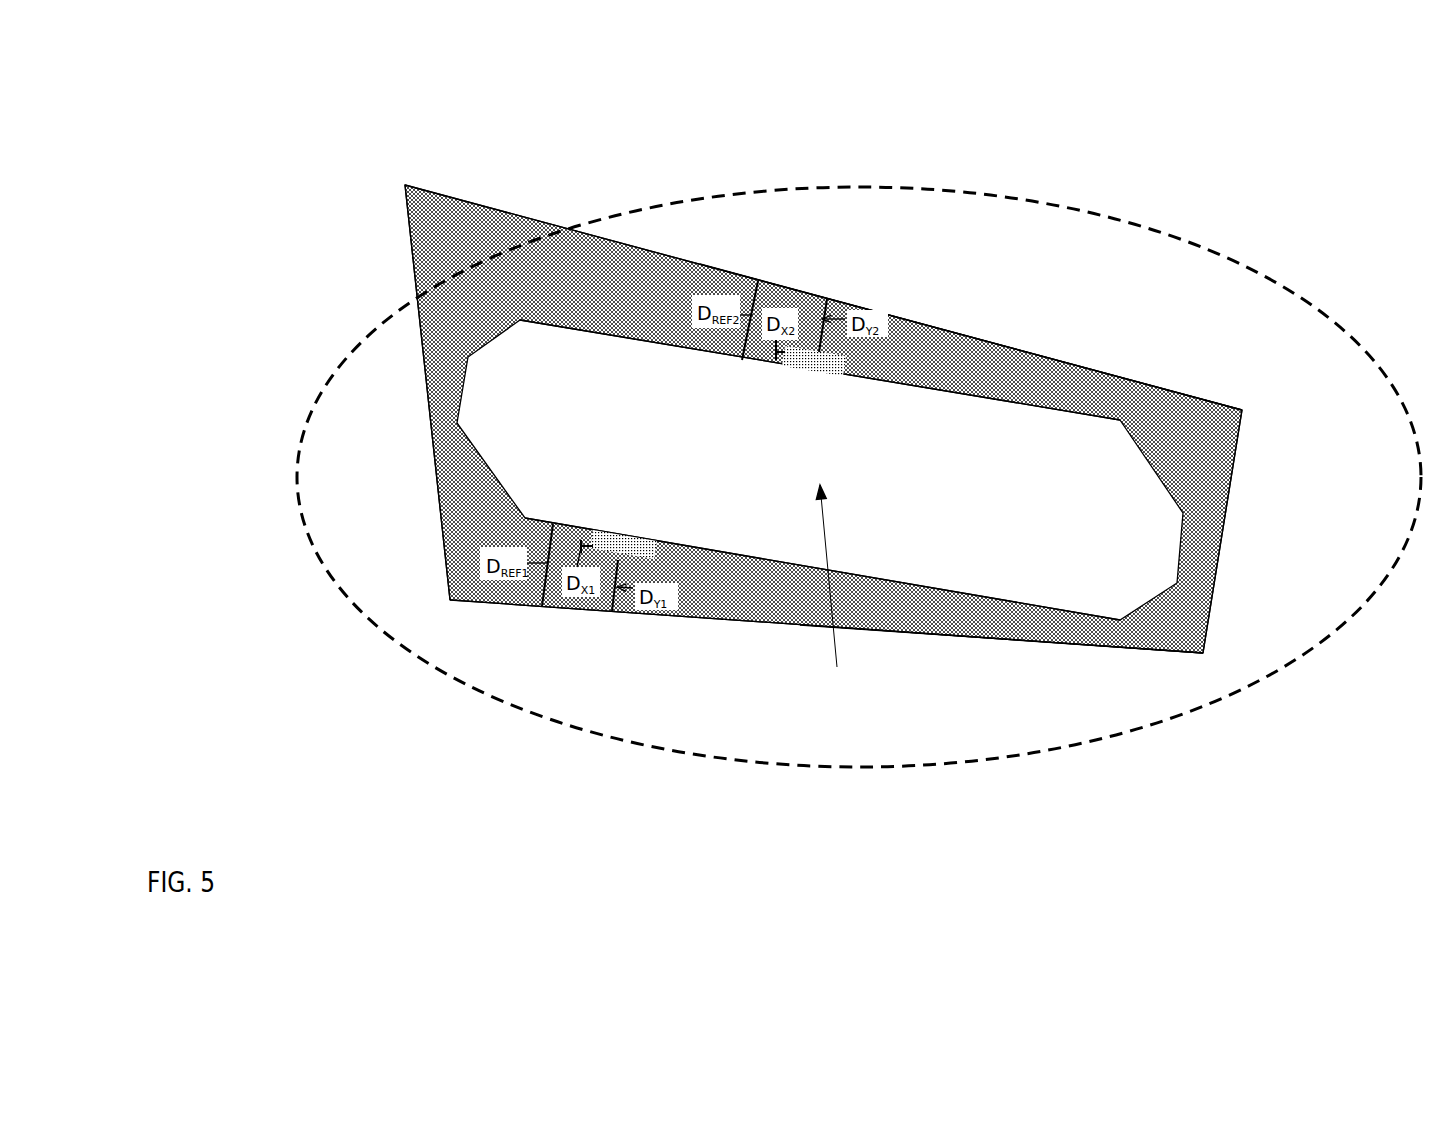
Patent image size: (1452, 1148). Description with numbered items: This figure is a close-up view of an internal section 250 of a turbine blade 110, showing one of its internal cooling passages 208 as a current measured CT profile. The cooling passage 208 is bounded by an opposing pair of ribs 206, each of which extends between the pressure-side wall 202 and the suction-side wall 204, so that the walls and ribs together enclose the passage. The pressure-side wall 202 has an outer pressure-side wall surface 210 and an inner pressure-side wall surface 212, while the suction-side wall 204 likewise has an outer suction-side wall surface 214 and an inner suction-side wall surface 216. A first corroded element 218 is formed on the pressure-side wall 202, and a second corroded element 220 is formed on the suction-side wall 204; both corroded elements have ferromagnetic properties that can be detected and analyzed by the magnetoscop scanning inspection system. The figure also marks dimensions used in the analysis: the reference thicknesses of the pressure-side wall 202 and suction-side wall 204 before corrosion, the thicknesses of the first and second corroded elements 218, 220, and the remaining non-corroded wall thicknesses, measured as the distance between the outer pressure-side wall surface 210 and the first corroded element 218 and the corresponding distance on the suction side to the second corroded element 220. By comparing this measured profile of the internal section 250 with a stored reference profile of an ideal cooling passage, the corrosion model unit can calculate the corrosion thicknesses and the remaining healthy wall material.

The turbine blade 110 is at (330, 245).
The internal section 250 is at (1127, 210).
The pressure-side wall 202 is at (728, 621).
The suction-side wall 204 is at (905, 318).
The ribs 206 is at (437, 503).
The cooling passage 208 is at (838, 594).
The outer pressure-side wall surface 210 is at (985, 639).
The inner pressure-side wall surface 212 is at (1010, 602).
The outer suction-side wall surface 214 is at (1047, 358).
The inner suction-side wall surface 216 is at (1018, 405).
The first corroded element 218 is at (618, 538).
The second corroded element 220 is at (810, 363).